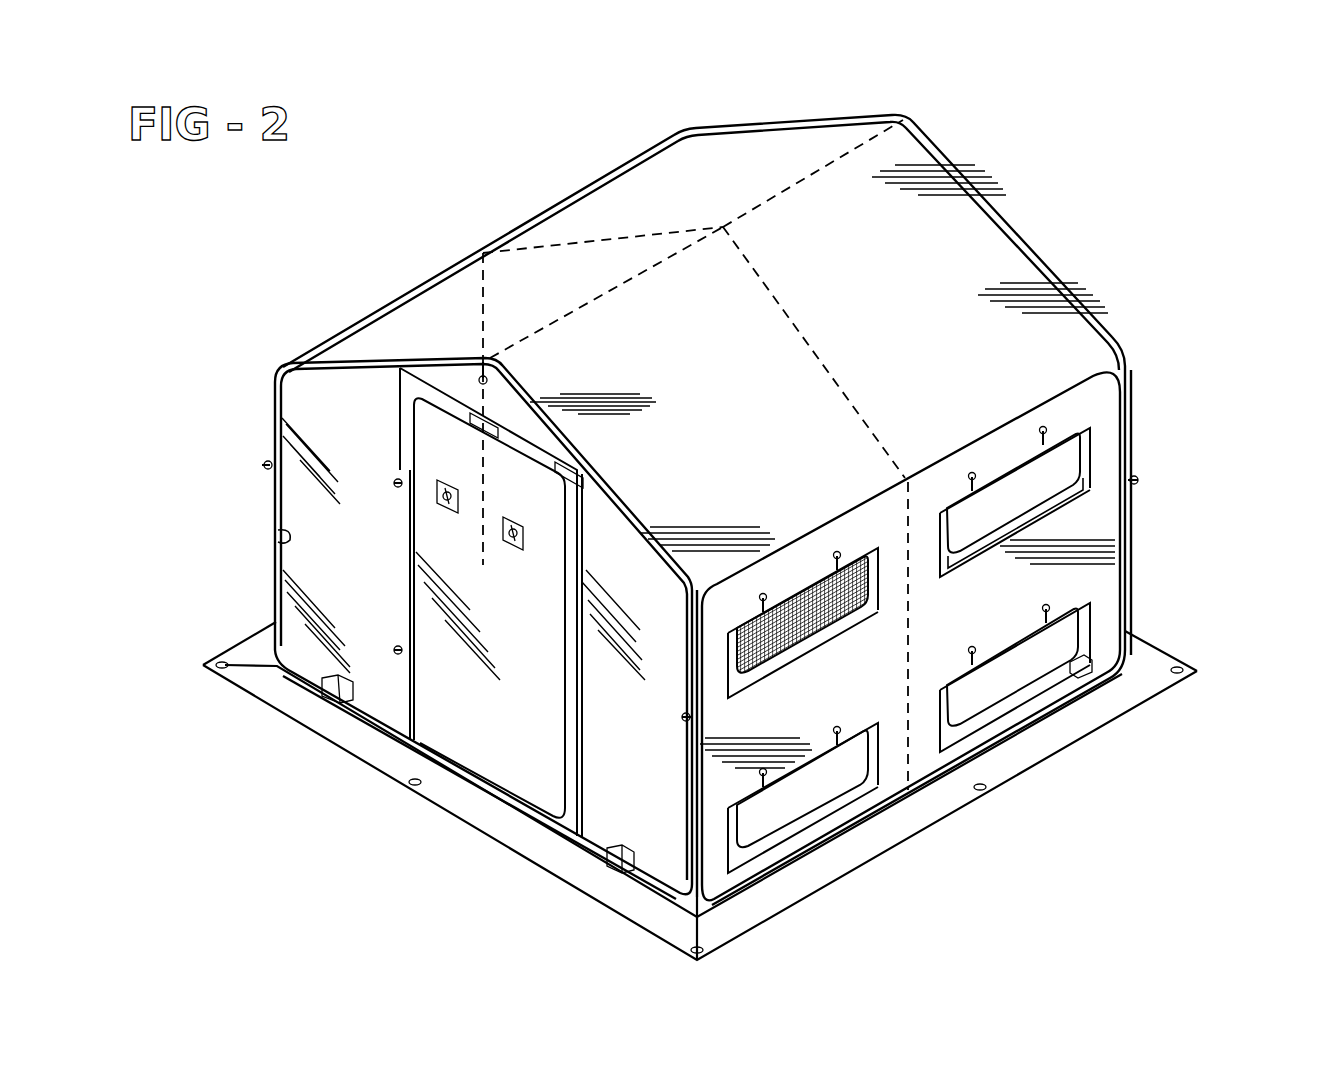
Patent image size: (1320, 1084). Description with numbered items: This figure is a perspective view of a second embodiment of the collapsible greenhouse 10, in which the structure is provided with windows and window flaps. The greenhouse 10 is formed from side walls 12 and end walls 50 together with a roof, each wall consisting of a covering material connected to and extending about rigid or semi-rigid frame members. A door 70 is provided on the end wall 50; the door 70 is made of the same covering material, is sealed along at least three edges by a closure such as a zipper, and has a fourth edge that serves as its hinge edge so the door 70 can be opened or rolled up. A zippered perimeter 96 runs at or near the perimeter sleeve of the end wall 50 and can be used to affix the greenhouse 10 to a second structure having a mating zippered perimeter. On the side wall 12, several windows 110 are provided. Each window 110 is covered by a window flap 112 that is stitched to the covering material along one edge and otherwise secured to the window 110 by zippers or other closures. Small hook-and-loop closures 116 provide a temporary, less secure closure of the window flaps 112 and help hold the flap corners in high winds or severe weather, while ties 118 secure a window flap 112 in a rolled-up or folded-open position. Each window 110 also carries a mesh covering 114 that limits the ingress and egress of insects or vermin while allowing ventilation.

The greenhouse 10 is at (1157, 238).
The side wall 12 is at (956, 638).
The end wall 50 is at (438, 628).
The door 70 is at (488, 603).
The zippered perimeter 96 is at (280, 538).
The window 110 is at (1057, 462).
The window flap 112 is at (1050, 507).
The mesh covering 114 is at (810, 617).
The hook-and-loop closure 116 is at (900, 789).
The tie 118 is at (978, 665).